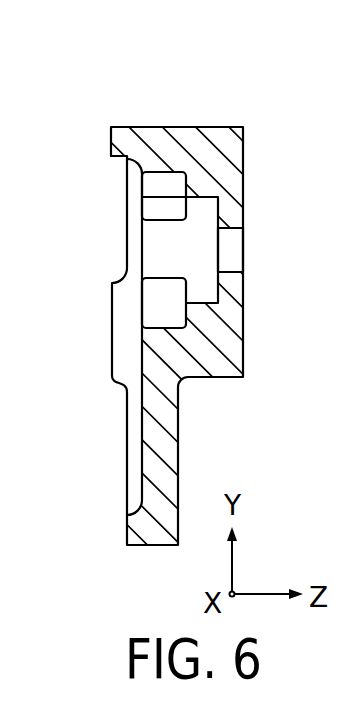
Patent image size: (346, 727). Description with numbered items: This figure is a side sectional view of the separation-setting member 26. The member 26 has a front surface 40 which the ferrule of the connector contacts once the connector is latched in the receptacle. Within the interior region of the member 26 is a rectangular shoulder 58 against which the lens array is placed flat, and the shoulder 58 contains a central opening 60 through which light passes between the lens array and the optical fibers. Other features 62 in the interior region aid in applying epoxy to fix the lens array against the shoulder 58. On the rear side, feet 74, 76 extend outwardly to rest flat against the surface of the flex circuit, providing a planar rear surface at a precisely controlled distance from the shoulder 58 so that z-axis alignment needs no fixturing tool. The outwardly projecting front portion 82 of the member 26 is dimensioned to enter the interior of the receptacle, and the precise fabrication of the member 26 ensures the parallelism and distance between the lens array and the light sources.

The separation-setting member 26 is at (246, 66).
The front surface 40 is at (243, 325).
The rectangular shoulder 58 is at (218, 217).
The central opening 60 is at (233, 248).
The features 62 is at (170, 187).
The foot 74 is at (112, 150).
The foot 76 is at (112, 340).
The outwardly projecting front portion 82 is at (201, 380).